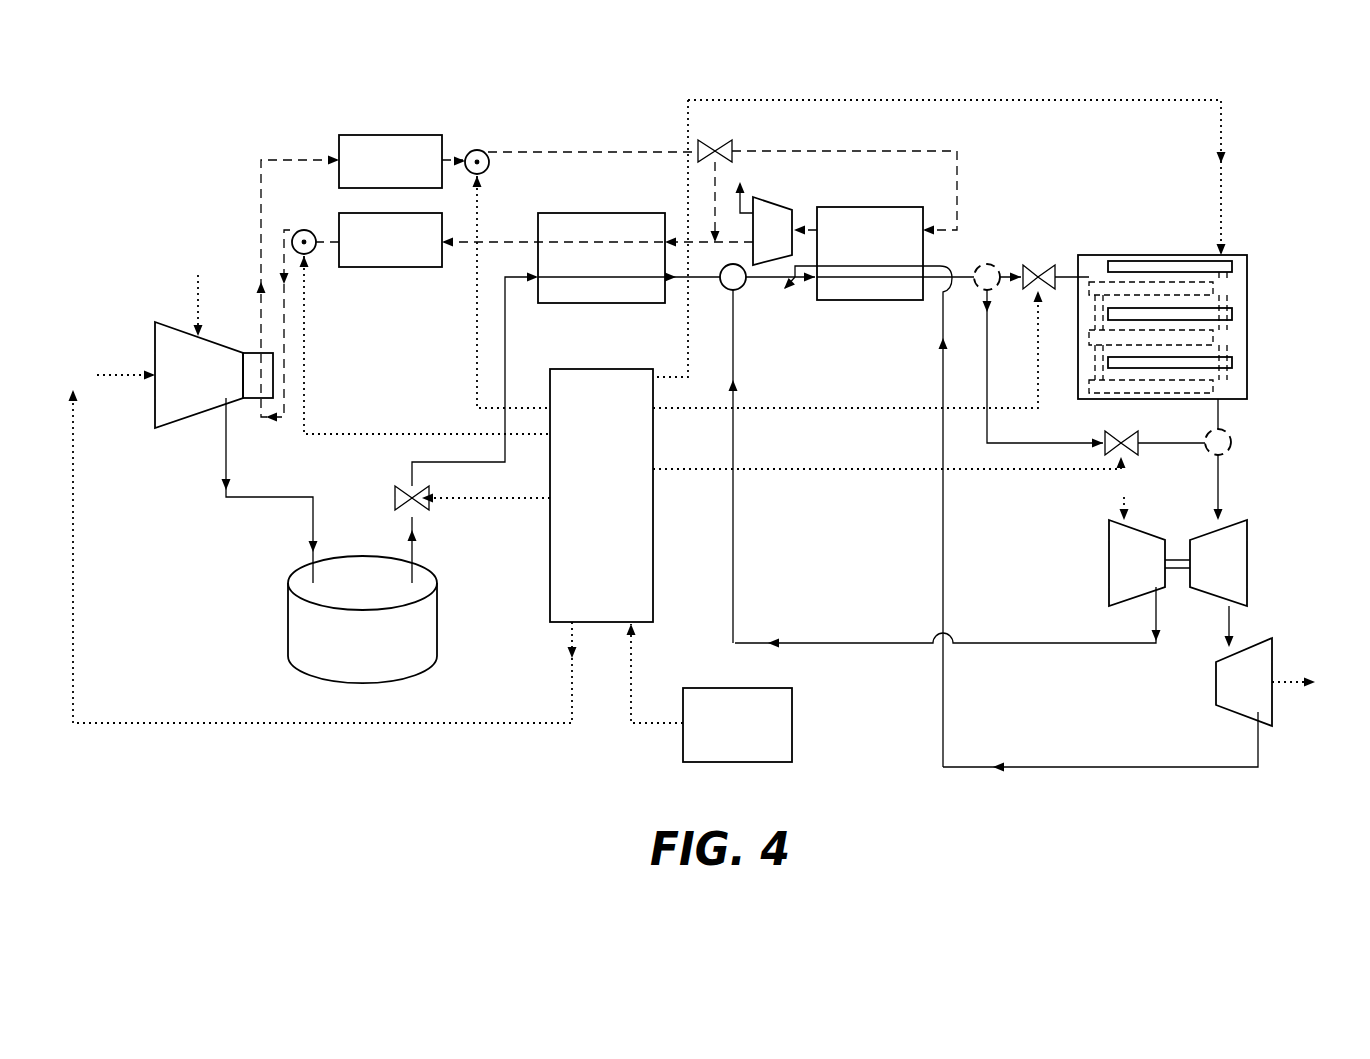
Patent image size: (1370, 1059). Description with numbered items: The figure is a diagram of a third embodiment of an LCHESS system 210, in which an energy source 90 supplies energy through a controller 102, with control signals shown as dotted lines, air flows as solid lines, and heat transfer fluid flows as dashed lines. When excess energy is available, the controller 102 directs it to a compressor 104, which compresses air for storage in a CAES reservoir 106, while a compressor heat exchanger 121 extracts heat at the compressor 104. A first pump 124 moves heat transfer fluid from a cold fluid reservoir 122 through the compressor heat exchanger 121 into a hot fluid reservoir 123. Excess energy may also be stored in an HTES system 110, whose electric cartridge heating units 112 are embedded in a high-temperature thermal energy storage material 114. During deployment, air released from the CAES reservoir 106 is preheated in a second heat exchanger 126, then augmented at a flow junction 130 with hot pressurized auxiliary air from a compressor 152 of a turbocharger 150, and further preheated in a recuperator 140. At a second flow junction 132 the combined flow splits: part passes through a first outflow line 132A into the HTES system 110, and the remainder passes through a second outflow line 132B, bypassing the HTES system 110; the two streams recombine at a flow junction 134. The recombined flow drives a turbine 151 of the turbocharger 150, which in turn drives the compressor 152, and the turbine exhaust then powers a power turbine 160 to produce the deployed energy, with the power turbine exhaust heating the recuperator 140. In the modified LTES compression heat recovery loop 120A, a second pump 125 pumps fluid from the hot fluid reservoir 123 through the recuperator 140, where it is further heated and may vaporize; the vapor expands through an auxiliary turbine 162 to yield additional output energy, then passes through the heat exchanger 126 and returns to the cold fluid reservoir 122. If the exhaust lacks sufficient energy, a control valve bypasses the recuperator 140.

The LCHESS system 210 is at (148, 125).
The controller 102 is at (653, 540).
The compressor 104 is at (188, 422).
The CAES reservoir 106 is at (288, 615).
The HTES system 110 is at (1204, 290).
The electric cartridge heating units 112 is at (1232, 266).
The thermal energy storage material 114 is at (1240, 292).
The LTES compression heat recovery loop 120A is at (536, 148).
The compressor heat exchanger 121 is at (248, 400).
The cold fluid reservoir 122 is at (390, 268).
The hot fluid reservoir 123 is at (375, 135).
The first pump 124 is at (311, 230).
The second pump 125 is at (474, 150).
The second heat exchanger 126 is at (570, 213).
The flow junction 130 is at (744, 290).
The second flow junction 132 is at (1035, 312).
The first outflow line 132A is at (1002, 262).
The second outflow line 132B is at (1003, 443).
The flow junction 134 is at (1231, 437).
The recuperator 140 is at (870, 300).
The turbocharger 150 is at (1192, 543).
The turbine 151 is at (1247, 590).
The compressor 152 is at (1109, 563).
The power turbine 160 is at (1272, 717).
The auxiliary turbine 162 is at (790, 204).
The energy source 90 is at (683, 744).